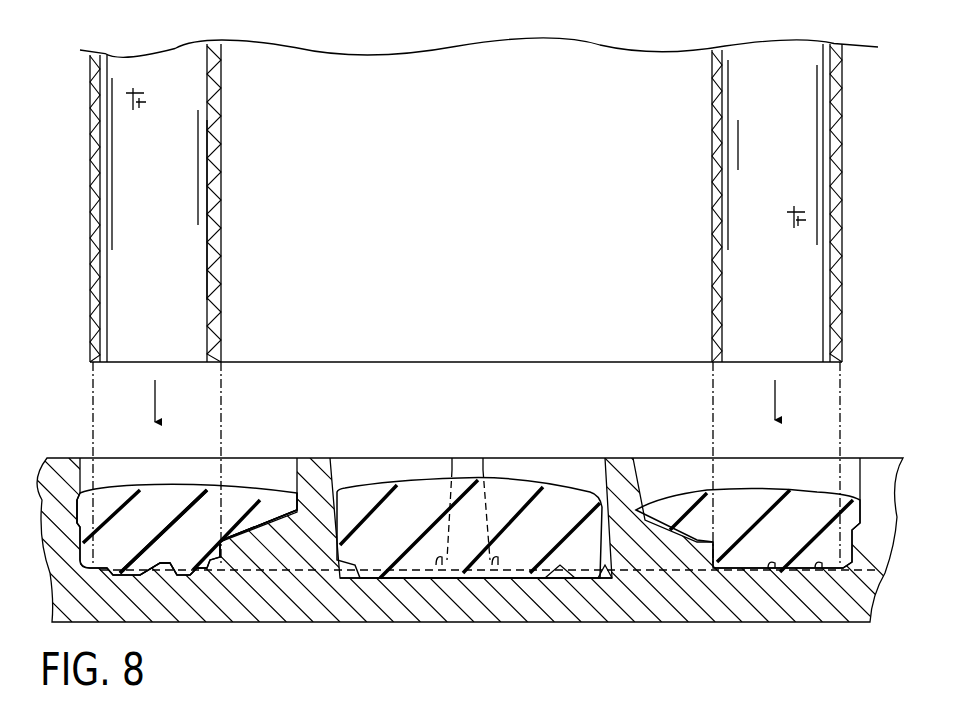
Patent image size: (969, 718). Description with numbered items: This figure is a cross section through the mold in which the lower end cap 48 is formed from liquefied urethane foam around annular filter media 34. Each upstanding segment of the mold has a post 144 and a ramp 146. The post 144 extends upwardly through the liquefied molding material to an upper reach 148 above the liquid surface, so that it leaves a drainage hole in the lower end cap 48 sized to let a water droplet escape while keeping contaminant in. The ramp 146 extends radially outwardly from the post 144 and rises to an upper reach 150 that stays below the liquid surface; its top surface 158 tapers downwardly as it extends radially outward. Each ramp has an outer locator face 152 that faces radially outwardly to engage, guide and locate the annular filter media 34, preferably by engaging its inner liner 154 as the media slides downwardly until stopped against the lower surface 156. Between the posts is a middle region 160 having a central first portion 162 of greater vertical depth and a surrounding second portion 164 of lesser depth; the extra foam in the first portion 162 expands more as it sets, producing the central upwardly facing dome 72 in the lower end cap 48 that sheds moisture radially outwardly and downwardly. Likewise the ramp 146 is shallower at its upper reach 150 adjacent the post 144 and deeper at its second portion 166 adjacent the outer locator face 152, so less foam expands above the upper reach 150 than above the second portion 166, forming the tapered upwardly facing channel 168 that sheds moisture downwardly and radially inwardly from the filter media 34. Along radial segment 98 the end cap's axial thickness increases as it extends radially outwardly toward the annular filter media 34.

The annular filter media 34 is at (137, 165).
The inner liner 154 is at (220, 213).
The radial segment 98 is at (120, 540).
The outer locator face 152 is at (215, 553).
The second portion of ramp 166 is at (222, 545).
The upwardly facing channel 168 is at (256, 548).
The upper reach of ramp 150 is at (288, 492).
The upper reach of post 148 is at (312, 465).
The post 144 is at (335, 484).
The central upwardly facing dome 72 is at (502, 487).
The lower end cap 48 is at (525, 492).
The lower surface 156 is at (213, 565).
The ramp 146 is at (257, 560).
The top surface of ramp 158 is at (300, 558).
The middle region 160 is at (397, 590).
The central first portion 162 is at (558, 570).
The surrounding second portion 164 is at (608, 565).